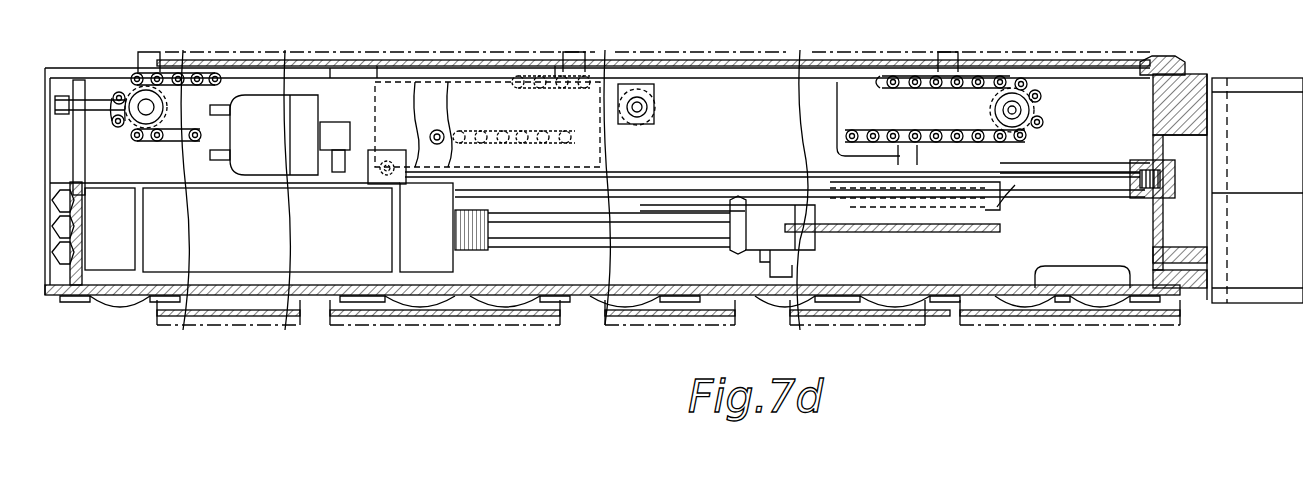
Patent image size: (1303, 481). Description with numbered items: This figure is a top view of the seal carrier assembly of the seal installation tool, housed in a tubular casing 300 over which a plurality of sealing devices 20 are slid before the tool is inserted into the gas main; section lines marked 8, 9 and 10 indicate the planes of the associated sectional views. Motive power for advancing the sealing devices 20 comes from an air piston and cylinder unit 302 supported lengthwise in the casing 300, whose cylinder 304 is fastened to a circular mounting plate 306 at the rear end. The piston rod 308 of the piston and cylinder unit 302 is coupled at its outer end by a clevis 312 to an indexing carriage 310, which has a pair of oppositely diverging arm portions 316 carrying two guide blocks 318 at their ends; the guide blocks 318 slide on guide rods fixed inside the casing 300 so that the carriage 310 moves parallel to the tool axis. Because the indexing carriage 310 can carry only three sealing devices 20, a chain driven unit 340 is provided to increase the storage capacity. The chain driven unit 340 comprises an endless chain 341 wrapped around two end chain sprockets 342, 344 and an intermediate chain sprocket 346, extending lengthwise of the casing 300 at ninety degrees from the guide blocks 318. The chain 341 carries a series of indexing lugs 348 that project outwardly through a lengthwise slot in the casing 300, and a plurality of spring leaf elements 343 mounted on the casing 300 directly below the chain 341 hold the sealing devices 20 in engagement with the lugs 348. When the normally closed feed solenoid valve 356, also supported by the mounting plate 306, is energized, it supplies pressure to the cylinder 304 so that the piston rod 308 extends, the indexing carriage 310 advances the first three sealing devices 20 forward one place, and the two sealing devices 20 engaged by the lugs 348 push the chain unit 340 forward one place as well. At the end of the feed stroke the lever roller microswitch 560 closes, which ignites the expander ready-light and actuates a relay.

The tubular casing 300 is at (395, 65).
The air piston and cylinder unit 302 is at (165, 276).
The cylinder 304 is at (100, 255).
The circular mounting plate 306 is at (78, 86).
The piston rod 308 is at (552, 230).
The indexing carriage 310 is at (975, 210).
The clevis 312 is at (763, 210).
The arm portions 316 is at (915, 215).
The guide blocks 318 is at (1035, 185).
The chain driven unit 340 is at (1020, 68).
The endless chain 341 is at (566, 60).
The end chain sprocket 342 is at (1038, 105).
The spring leaf elements 343 is at (405, 318).
The end chain sprocket 344 is at (160, 75).
The intermediate chain sprocket 346 is at (665, 100).
The indexing lugs 348 is at (150, 50).
The feed air solenoid valve 356 is at (298, 115).
The lever roller microswitch 560 is at (778, 282).
The sealing devices 20 is at (245, 322).
The section line 8 is at (935, 158).
The section line 9 is at (824, 372).
The section line 10 is at (448, 40).